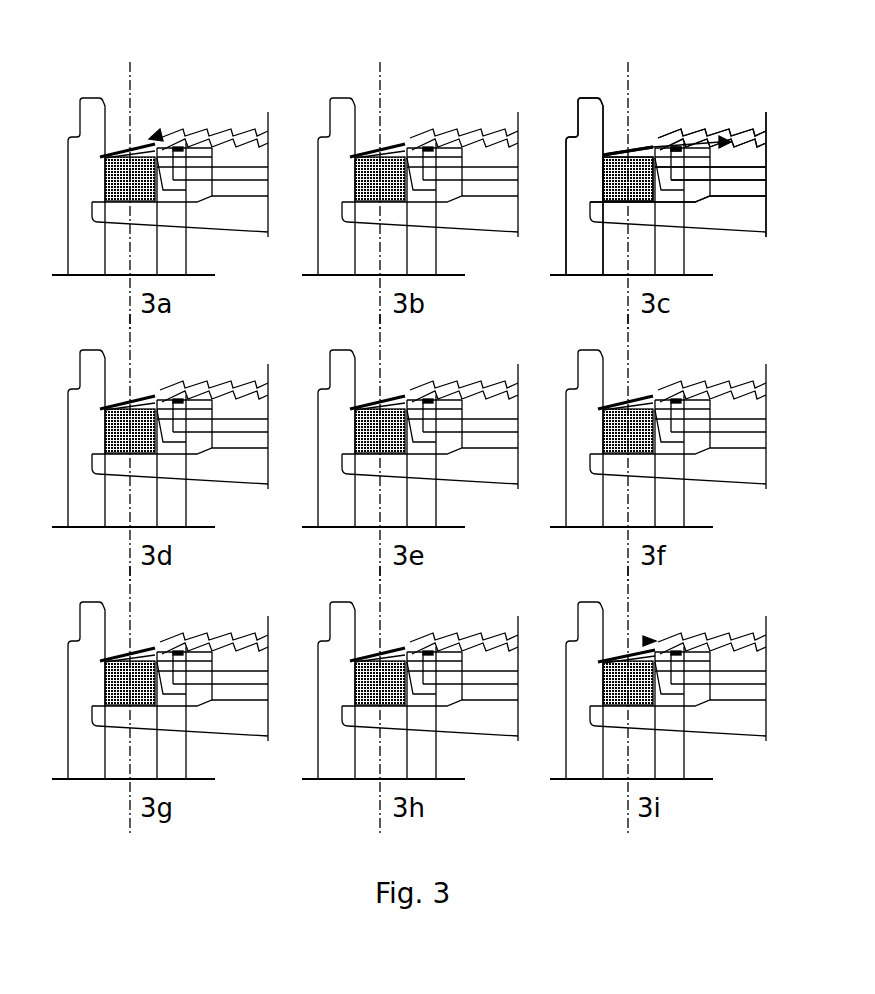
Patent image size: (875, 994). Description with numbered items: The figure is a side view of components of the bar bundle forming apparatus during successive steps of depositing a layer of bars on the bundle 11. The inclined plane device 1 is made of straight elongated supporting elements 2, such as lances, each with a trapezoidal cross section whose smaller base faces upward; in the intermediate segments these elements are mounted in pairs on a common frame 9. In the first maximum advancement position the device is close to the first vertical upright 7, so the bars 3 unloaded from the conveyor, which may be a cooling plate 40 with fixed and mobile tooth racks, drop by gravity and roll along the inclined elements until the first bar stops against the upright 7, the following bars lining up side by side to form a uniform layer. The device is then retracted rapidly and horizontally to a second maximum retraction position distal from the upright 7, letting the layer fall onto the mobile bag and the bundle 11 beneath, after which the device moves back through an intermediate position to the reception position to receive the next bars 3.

The inclined plane device 1 is at (157, 133).
The elongated supporting element 2 is at (675, 149).
The bars 3 is at (637, 147).
The first vertical upright 7 is at (592, 117).
The common frame 9 is at (757, 162).
The bar bundle 11 is at (603, 183).
The cooling plate 40 is at (747, 140).